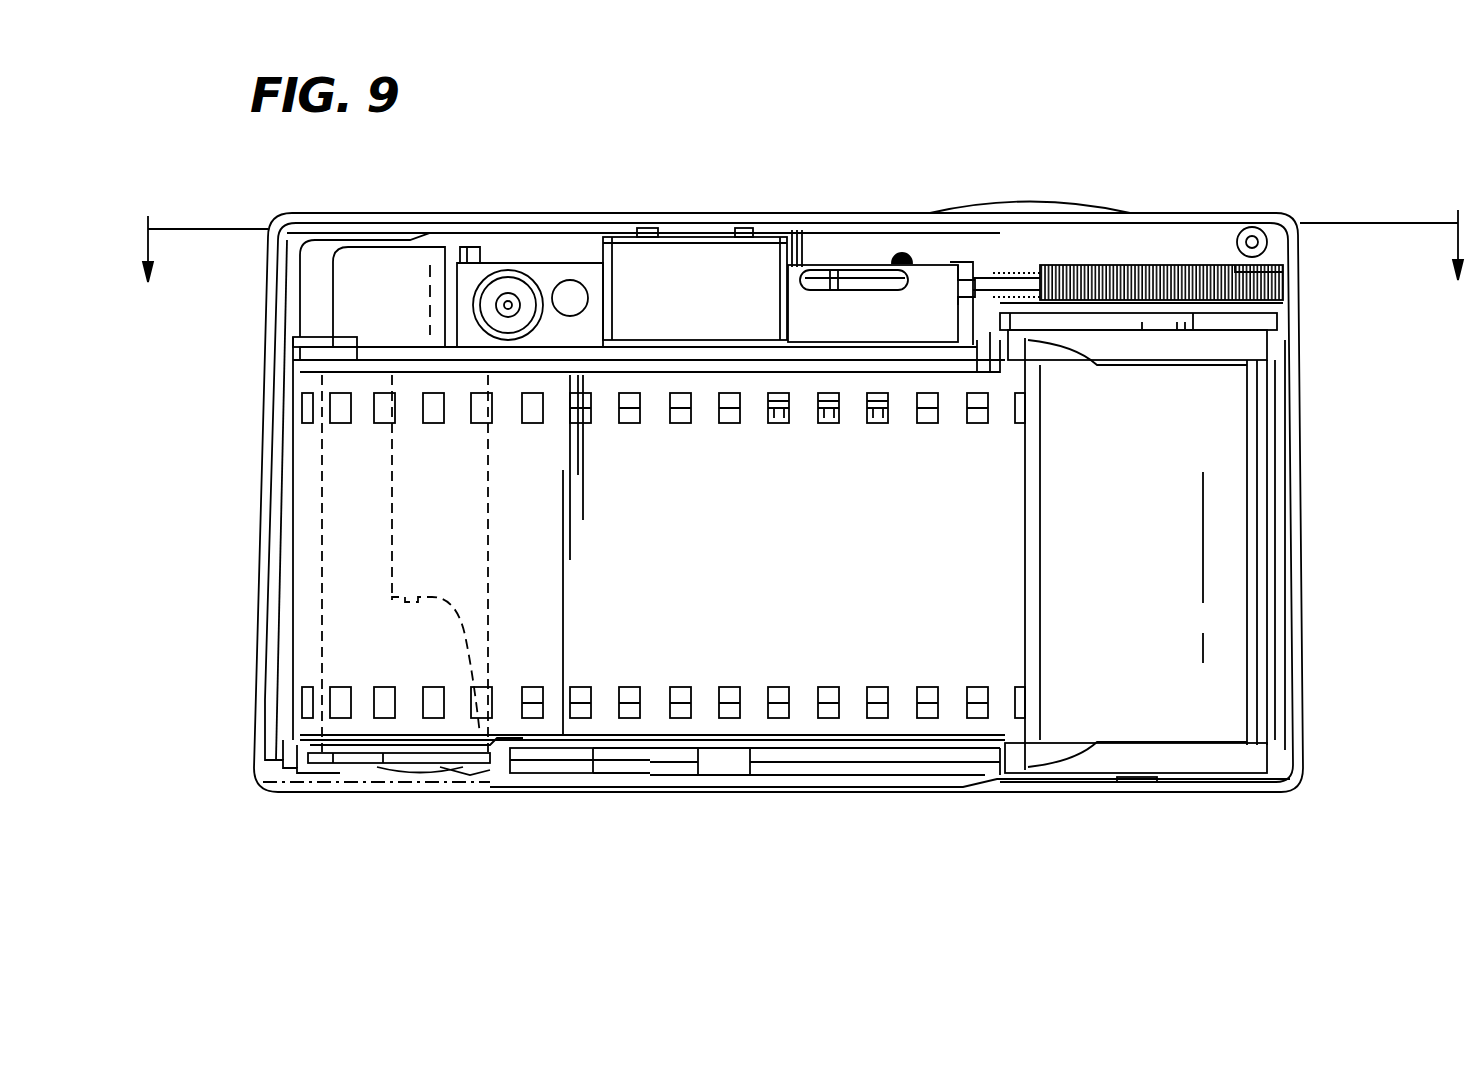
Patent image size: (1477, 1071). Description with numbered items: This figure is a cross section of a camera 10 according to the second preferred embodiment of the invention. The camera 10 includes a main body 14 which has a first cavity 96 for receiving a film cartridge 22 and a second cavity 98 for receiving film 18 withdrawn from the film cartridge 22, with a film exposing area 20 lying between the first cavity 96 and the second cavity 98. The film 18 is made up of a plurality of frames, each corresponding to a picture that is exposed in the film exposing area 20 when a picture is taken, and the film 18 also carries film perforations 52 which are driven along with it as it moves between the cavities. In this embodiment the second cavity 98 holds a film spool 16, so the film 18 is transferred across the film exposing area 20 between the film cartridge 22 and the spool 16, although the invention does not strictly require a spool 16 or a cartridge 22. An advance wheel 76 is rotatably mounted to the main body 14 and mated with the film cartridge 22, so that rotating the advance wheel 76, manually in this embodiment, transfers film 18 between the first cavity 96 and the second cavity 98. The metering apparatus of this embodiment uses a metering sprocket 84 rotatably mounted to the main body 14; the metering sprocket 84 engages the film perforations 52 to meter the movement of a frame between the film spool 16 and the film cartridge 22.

The camera 10 is at (1213, 85).
The main body 14 is at (682, 213).
The film spool 16 is at (300, 758).
The film 18 is at (362, 722).
The film exposing area 20 is at (727, 763).
The film cartridge 22 is at (1233, 385).
The film perforations 52 is at (580, 697).
The advance wheel 76 is at (1283, 280).
The metering sprocket 84 is at (825, 423).
The first cavity 96 is at (313, 323).
The second cavity 98 is at (1275, 322).